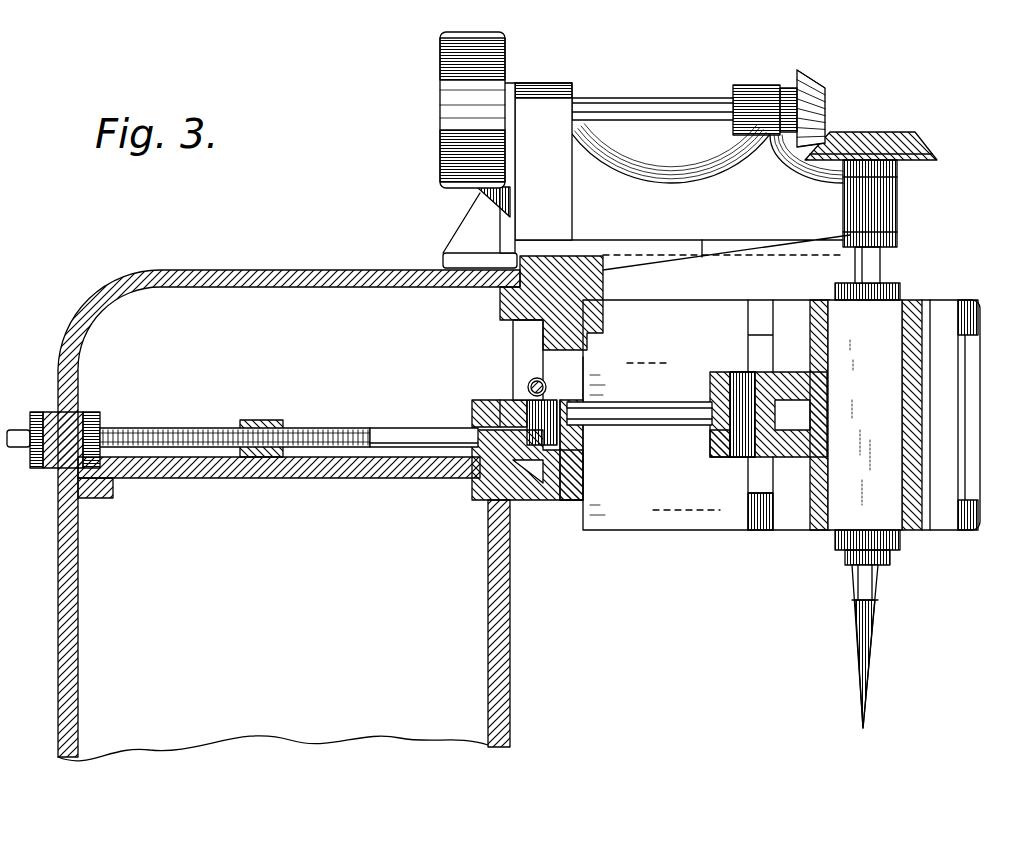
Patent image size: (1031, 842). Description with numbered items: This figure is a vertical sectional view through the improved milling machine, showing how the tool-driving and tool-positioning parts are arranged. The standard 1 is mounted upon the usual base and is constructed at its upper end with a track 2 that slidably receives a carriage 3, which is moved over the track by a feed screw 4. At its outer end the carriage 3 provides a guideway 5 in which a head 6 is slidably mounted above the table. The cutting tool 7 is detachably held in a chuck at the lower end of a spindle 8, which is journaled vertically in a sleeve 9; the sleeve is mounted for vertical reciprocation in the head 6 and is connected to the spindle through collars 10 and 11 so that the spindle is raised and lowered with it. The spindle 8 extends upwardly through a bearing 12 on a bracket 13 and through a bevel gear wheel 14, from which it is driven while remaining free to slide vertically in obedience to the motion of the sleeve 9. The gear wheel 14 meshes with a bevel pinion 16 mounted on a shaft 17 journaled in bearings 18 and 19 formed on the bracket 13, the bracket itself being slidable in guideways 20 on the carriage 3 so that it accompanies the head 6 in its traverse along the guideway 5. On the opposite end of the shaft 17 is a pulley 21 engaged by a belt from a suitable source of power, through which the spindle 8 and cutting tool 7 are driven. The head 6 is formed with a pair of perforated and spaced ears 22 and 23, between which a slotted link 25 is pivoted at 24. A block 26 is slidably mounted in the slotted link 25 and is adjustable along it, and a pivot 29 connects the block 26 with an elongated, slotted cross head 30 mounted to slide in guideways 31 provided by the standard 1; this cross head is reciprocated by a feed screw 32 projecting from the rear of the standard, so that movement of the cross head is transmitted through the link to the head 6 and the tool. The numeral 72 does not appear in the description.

The standard 1 is at (128, 285).
The track 2 is at (545, 290).
The carriage 3 is at (688, 520).
The feed screw 4 is at (532, 380).
The guideway 5 is at (968, 378).
The head 6 is at (912, 480).
The cutting tool 7 is at (870, 688).
The spindle 8 is at (868, 262).
The sleeve 9 is at (883, 328).
The collar 10 is at (900, 540).
The collar 11 is at (840, 290).
The bearing 12 is at (880, 207).
The bracket 13 is at (697, 182).
The bevel gear wheel 14 is at (920, 146).
The bevel pinion 16 is at (820, 84).
The shaft 17 is at (655, 108).
The bearing 18 is at (555, 100).
The bearing 19 is at (758, 95).
The guideways 20 is at (620, 246).
The pulley 21 is at (458, 108).
The ear 22 is at (717, 374).
The ear 23 is at (710, 448).
The pivot 24 is at (742, 380).
The slotted link 25 is at (685, 422).
The block 26 is at (518, 400).
The pivot 29 is at (560, 400).
The cross head 30 is at (470, 462).
The guideways 31 is at (298, 472).
The feed screw 32 is at (178, 430).
The column 72 is at (472, 222).